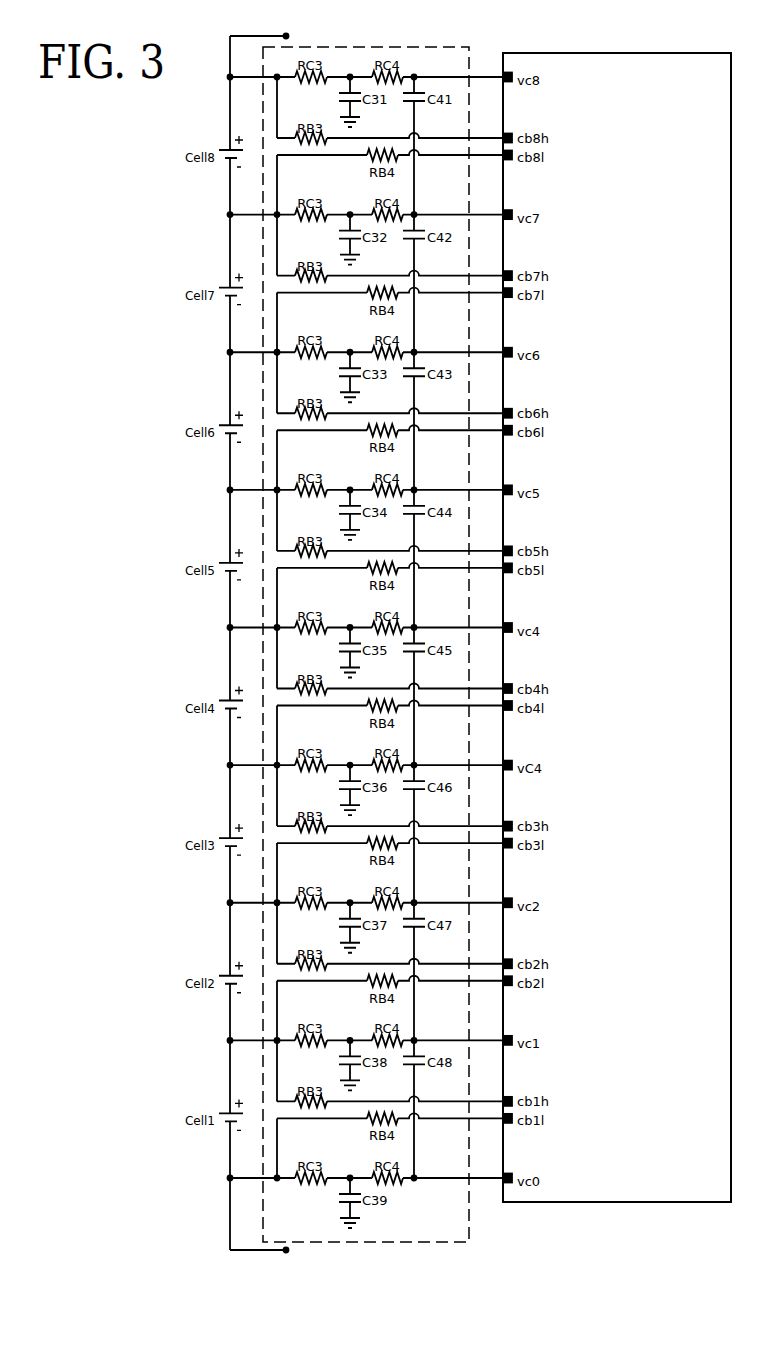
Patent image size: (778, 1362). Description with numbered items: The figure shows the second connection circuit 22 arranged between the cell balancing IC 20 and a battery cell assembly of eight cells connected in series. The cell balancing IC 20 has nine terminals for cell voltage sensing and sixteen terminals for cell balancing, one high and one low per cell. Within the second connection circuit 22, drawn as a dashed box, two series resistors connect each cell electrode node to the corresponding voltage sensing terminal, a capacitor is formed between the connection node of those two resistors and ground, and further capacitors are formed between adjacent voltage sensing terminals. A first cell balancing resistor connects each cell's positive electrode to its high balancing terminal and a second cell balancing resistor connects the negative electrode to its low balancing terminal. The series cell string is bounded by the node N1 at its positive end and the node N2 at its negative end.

The cell balancing IC 20 is at (591, 53).
The second connection circuit 22 is at (435, 1242).
The first node N1 is at (263, 28).
The second node N2 is at (263, 1261).